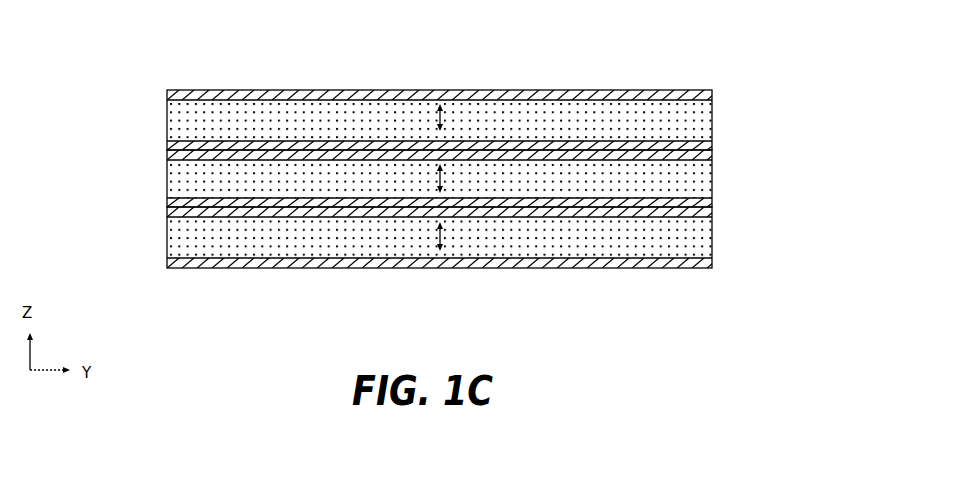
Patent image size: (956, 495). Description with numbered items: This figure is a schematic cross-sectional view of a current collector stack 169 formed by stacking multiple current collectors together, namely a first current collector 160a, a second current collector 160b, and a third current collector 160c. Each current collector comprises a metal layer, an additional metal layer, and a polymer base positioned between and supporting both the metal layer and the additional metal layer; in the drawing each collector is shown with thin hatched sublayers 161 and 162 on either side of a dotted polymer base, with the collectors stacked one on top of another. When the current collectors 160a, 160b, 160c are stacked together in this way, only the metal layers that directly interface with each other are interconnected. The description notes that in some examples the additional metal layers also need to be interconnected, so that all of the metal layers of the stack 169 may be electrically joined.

The current collector stack 169 is at (156, 73).
The first current collector 160a is at (162, 90).
The second current collector 160b is at (162, 151).
The third current collector 160c is at (162, 208).
The first sublayer (electrically conductive sublayer) 161 is at (712, 91).
The second sublayer (insulating sublayer) 162 is at (712, 145).